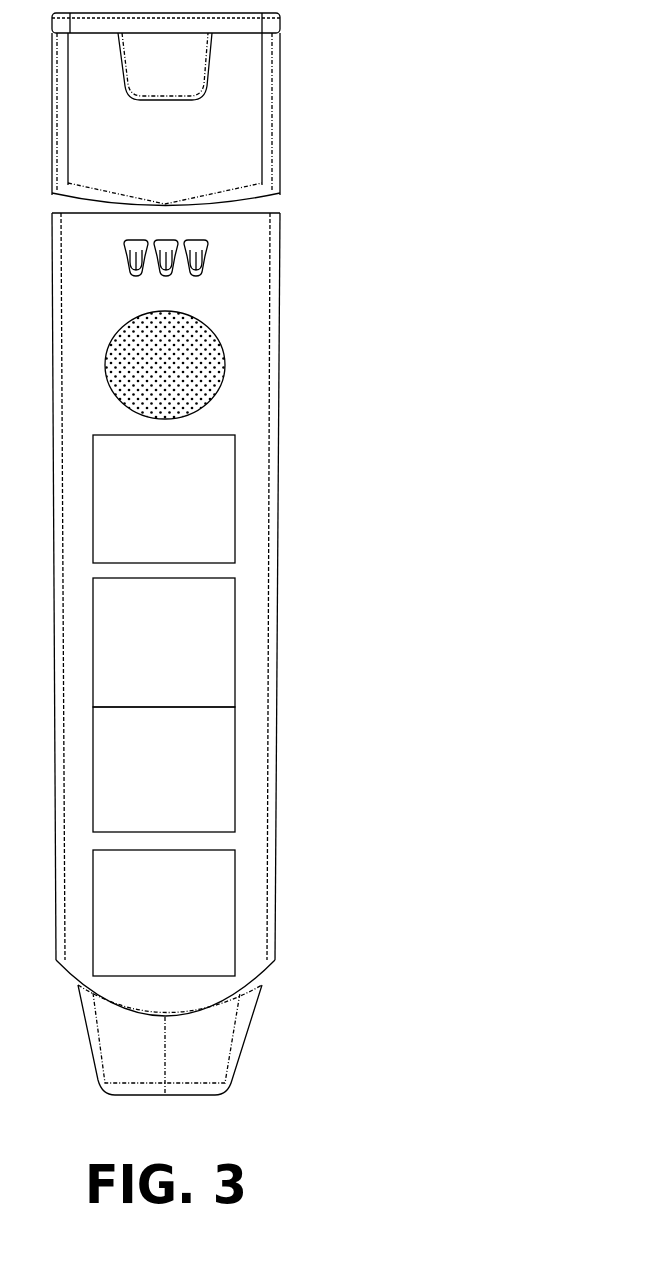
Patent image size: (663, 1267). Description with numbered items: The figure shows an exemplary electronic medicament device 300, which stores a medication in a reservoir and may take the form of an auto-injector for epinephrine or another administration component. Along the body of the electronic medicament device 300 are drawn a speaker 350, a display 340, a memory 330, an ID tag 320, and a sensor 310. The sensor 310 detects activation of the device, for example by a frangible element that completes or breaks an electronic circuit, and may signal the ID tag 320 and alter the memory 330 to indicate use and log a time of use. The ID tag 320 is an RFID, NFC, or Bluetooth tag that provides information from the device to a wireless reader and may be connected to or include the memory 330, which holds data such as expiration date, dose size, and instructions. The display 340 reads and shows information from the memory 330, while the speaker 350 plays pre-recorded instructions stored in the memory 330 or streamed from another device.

The electronic medicament device 300 is at (268, 114).
The speaker 350 is at (212, 333).
The display 340 is at (235, 503).
The memory 330 is at (235, 637).
The ID tag 320 is at (235, 762).
The sensor 310 is at (235, 902).